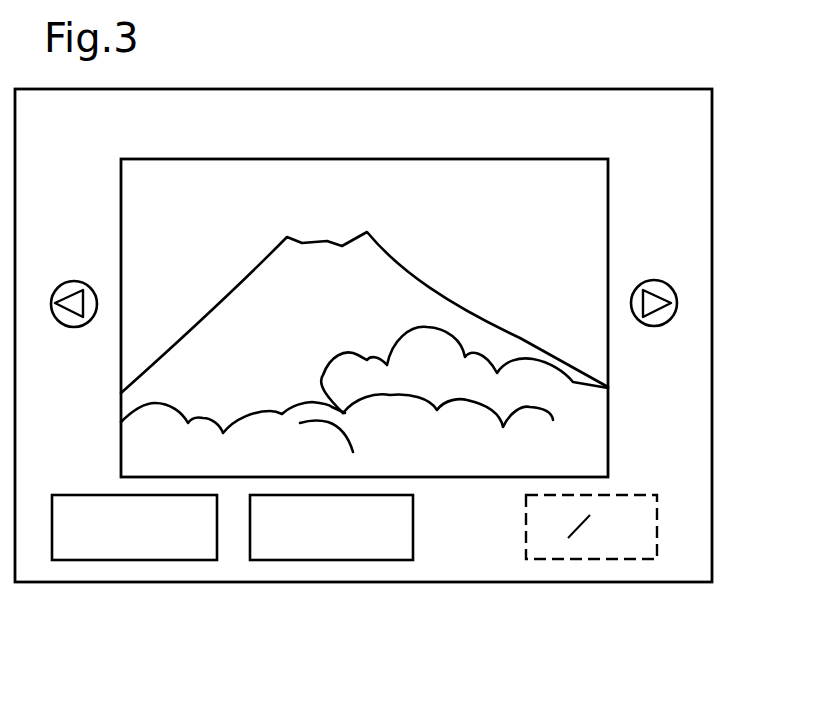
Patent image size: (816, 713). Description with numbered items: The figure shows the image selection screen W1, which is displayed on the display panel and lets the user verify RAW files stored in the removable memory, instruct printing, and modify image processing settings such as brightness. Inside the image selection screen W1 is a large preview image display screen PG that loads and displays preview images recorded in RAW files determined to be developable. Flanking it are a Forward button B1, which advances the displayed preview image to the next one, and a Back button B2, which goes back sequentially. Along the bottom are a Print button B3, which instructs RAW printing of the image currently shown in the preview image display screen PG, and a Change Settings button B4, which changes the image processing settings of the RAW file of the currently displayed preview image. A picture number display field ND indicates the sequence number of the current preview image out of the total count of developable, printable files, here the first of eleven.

The image selection screen W1 is at (509, 89).
The preview image display screen PG is at (508, 159).
The Forward button B1 is at (655, 281).
The Back button B2 is at (73, 281).
The Print button B3 is at (132, 560).
The Change Settings button B4 is at (328, 560).
The picture number display field ND is at (580, 559).